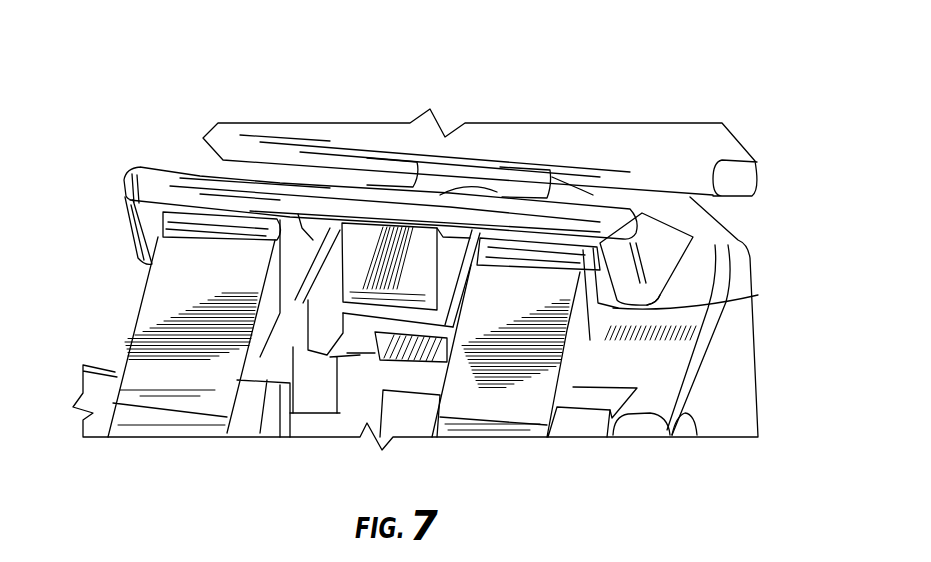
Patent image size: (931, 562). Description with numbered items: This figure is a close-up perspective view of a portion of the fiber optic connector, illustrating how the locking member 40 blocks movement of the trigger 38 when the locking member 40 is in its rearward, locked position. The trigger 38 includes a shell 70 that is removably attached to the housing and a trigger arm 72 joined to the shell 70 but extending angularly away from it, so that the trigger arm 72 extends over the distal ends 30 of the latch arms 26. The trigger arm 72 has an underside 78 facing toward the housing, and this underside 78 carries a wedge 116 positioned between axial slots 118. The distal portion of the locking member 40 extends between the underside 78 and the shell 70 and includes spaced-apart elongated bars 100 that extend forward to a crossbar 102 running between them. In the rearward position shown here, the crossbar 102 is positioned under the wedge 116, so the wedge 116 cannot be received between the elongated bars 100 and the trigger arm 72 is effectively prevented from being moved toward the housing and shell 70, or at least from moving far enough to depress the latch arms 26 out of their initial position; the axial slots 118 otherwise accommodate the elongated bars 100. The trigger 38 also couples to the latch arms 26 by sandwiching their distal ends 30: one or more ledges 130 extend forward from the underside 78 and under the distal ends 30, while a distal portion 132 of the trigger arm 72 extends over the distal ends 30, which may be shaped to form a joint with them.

The latch arm 26 is at (144, 282).
The distal end 30 is at (150, 222).
The trigger 38 is at (728, 371).
The locking member 40 is at (693, 122).
The shell 70 is at (690, 418).
The trigger arm 72 is at (124, 187).
The underside 78 is at (320, 220).
The elongated bars 100 is at (474, 257).
The crossbar 102 is at (382, 316).
The wedge 116 is at (358, 222).
The axial slots 118 is at (323, 243).
The ledges 130 is at (670, 308).
The distal portion 132 is at (598, 220).